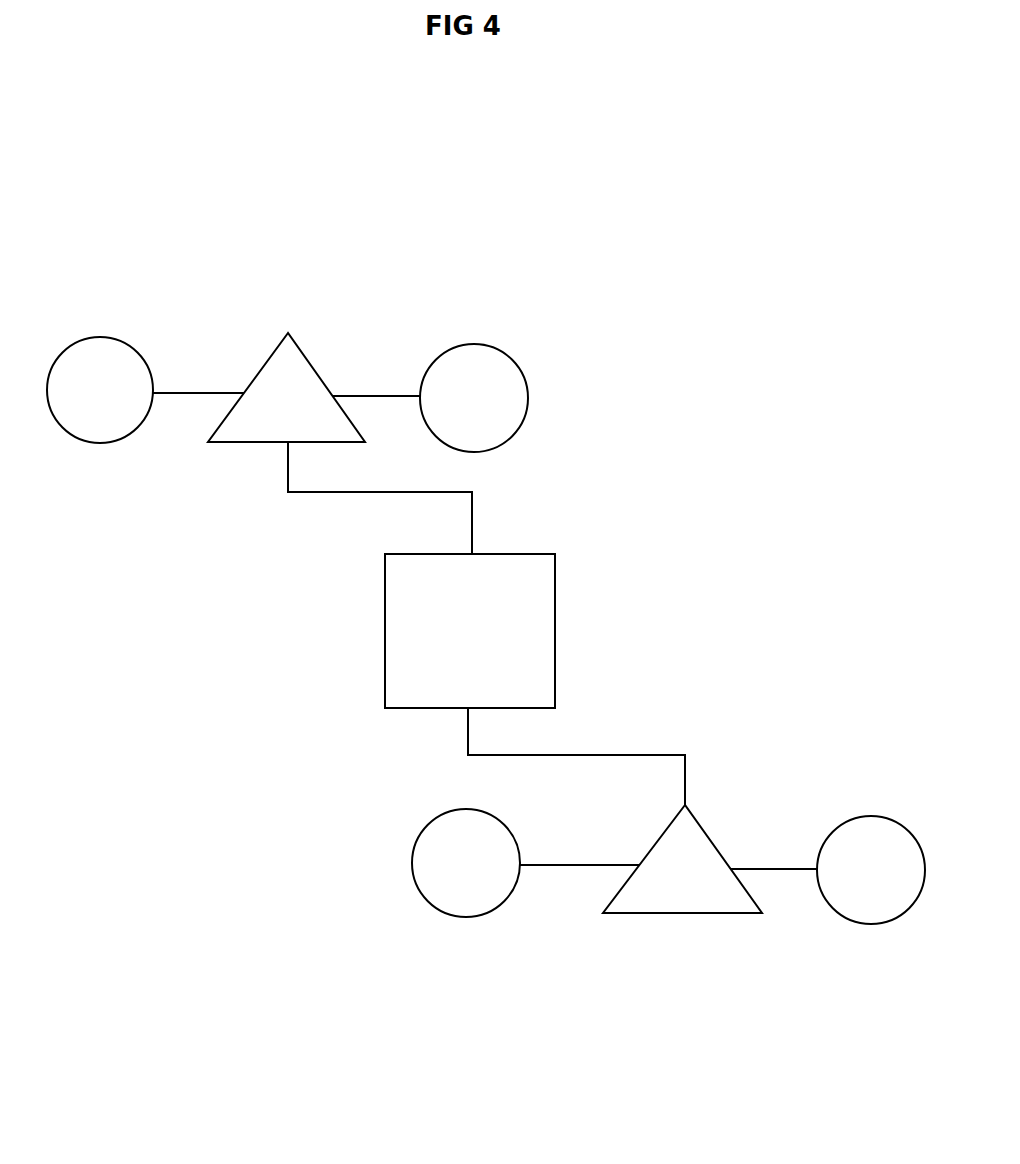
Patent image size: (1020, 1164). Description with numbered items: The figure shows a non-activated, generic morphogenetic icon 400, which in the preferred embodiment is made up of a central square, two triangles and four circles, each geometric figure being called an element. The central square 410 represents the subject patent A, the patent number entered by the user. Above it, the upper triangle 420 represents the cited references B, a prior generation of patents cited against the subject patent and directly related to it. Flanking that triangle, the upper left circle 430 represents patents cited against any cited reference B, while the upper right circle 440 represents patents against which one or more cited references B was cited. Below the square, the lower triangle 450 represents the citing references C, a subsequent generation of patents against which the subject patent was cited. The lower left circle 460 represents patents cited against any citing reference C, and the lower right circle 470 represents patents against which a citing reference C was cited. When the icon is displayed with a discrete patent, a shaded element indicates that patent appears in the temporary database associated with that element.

The morphogenetic icon 400 is at (693, 395).
The central square 410 is at (555, 600).
The upper triangle 420 is at (288, 333).
The upper left circle 430 is at (100, 337).
The upper right circle 440 is at (528, 398).
The lower triangle 450 is at (680, 913).
The lower left circle 460 is at (465, 917).
The lower right circle 470 is at (872, 924).